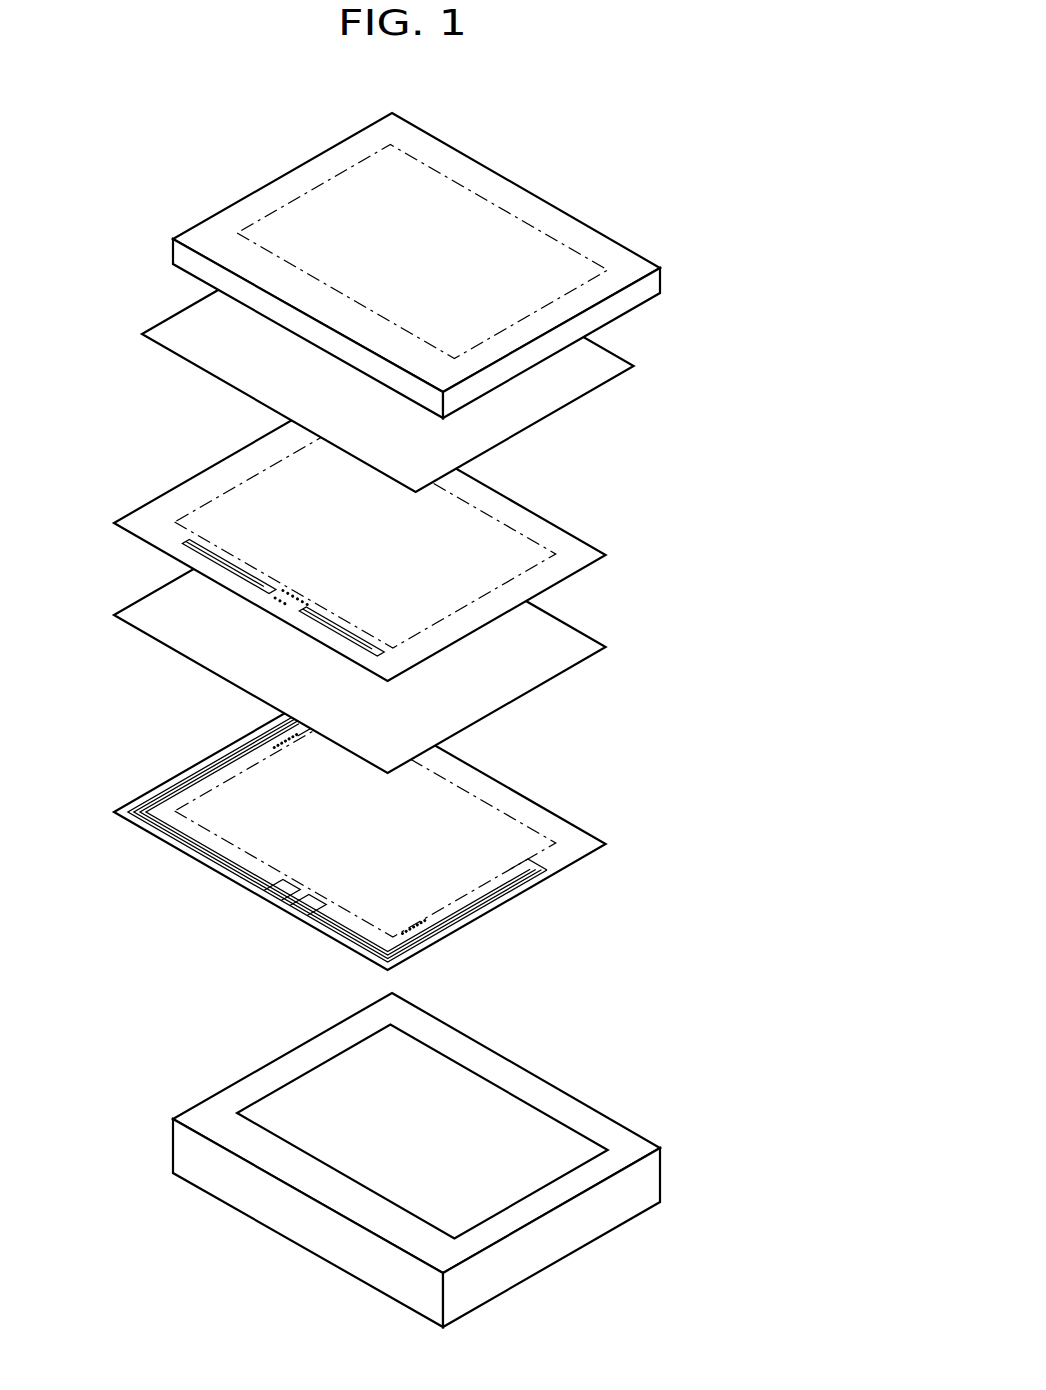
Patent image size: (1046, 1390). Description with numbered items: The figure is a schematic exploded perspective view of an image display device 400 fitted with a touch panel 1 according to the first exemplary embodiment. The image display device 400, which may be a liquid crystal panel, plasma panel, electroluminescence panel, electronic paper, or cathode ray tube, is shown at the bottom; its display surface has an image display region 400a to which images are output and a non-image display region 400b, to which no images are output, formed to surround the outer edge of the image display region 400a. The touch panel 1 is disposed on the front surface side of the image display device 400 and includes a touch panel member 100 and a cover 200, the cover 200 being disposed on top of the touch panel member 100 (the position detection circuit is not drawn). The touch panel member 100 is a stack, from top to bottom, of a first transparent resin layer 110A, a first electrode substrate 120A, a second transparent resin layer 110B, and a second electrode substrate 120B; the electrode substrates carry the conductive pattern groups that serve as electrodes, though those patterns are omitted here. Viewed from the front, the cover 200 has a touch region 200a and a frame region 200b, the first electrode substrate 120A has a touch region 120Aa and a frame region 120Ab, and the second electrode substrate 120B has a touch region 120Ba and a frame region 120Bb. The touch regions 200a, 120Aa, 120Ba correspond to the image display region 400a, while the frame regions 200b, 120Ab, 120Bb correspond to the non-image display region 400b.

The touch panel 1 is at (464, 720).
The touch panel member 100 is at (447, 589).
The cover 200 is at (476, 280).
The touch region of cover 200a is at (498, 204).
The frame region of cover 200b is at (285, 182).
The first transparent resin layer 110A is at (435, 361).
The first electrode substrate 120A is at (421, 539).
The touch region of first electrode substrate 120Aa is at (488, 515).
The frame region of first electrode substrate 120Ab is at (212, 473).
The second transparent resin layer 110B is at (533, 665).
The second electrode substrate 120B is at (419, 828).
The touch region of second electrode substrate 120Ba is at (460, 784).
The frame region of second electrode substrate 120Bb is at (212, 763).
The image display device 400 is at (431, 1160).
The image display region 400a is at (498, 1084).
The non-image display region 400b is at (285, 1062).